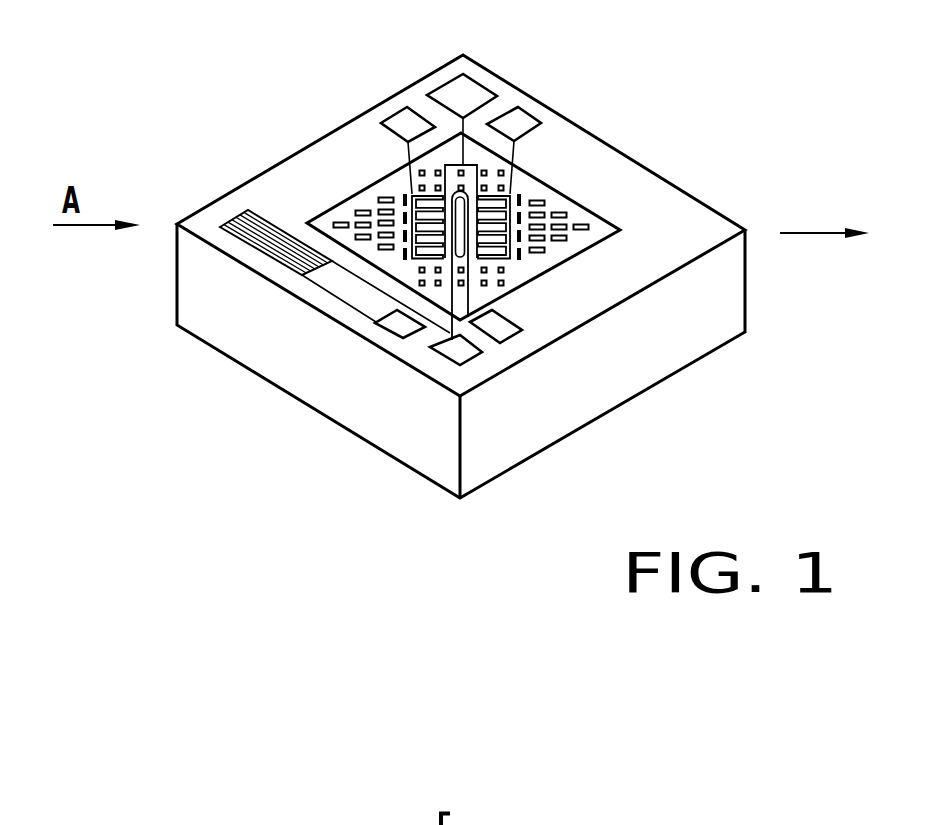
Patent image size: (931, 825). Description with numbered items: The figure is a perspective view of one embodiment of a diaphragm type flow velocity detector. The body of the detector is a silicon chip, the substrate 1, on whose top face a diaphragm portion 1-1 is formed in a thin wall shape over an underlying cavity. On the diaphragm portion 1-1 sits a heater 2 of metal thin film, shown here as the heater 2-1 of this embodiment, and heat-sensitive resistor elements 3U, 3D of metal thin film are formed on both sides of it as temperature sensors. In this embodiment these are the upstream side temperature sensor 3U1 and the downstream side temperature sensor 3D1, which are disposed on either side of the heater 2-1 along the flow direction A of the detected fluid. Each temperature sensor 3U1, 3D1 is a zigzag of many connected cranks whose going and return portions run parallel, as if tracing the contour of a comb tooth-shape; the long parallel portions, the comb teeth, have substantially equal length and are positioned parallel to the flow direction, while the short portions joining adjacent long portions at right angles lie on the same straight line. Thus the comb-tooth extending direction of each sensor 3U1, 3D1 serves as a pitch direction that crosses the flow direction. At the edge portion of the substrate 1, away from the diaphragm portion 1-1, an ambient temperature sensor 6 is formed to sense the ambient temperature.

The silicon chip 1 is at (645, 368).
The diaphragm portion 1-1 is at (580, 213).
The heater 2 is at (470, 197).
The heater 2-1 is at (527, 174).
The heat-sensitive resistor element 3U is at (420, 188).
The upstream side temperature sensor 3U1 is at (334, 133).
The heat-sensitive resistor element 3D is at (508, 192).
The downstream side temperature sensor 3D1 is at (589, 162).
The ambient temperature sensor 6 is at (248, 243).